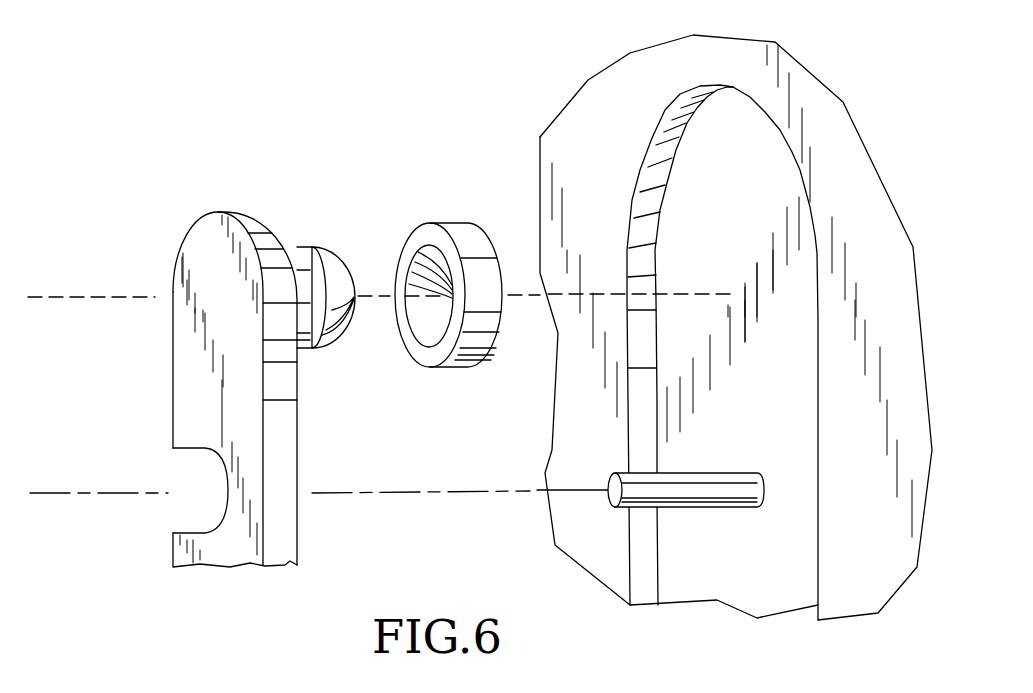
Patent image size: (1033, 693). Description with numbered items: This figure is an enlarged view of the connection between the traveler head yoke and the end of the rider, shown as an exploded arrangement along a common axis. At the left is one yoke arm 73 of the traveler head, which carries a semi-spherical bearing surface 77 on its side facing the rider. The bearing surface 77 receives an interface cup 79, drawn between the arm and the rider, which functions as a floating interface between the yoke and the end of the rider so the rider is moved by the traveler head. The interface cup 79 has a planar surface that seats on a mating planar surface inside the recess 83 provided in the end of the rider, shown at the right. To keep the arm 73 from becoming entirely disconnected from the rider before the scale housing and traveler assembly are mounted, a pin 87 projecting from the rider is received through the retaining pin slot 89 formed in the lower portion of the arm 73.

The arm 73 is at (247, 383).
The semi-spherical bearing surface 77 is at (310, 268).
The interface cup 79 is at (468, 242).
The recess 83 is at (718, 188).
The pin 87 is at (698, 493).
The retaining pin slot 89 is at (192, 448).